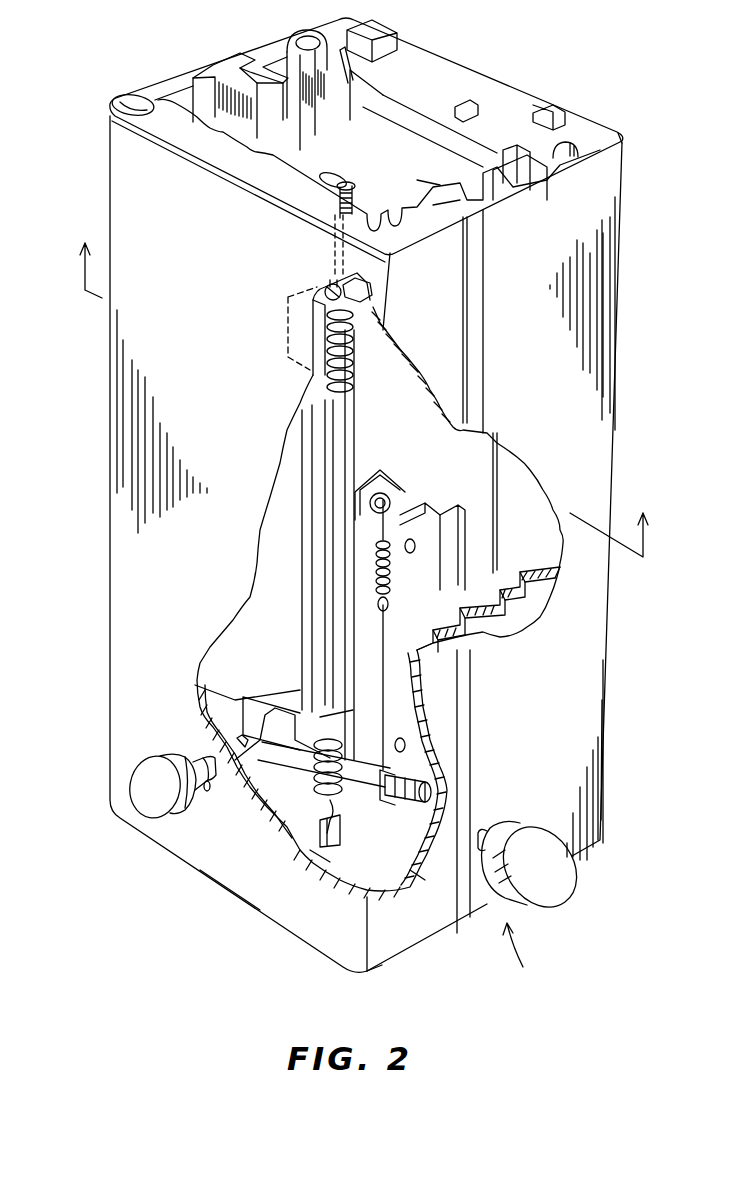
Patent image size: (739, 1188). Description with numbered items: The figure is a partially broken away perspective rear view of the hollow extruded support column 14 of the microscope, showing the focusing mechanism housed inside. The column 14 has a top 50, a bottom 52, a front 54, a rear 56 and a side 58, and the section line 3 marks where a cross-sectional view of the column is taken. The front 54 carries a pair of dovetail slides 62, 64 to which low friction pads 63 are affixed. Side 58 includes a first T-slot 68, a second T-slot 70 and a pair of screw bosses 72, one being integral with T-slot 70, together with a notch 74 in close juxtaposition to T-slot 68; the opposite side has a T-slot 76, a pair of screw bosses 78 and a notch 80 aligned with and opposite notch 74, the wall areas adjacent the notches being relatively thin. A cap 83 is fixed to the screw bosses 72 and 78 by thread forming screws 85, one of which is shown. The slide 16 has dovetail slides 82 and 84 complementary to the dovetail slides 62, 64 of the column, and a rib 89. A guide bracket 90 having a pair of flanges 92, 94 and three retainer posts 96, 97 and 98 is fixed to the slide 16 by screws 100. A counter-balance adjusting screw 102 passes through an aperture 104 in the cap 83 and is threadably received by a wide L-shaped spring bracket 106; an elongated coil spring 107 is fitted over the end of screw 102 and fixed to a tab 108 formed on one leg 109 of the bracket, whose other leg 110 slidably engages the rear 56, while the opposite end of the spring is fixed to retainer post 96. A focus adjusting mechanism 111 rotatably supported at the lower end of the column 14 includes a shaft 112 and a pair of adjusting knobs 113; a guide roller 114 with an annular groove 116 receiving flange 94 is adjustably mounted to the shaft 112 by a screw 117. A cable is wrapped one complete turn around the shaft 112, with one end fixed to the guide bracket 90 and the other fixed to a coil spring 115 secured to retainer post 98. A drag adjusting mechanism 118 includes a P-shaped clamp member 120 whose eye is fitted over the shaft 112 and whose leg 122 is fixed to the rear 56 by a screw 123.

The section line 3- 3 is at (360, 401).
The column 14 is at (610, 426).
The slide 16 is at (396, 158).
The top 50 is at (603, 137).
The bottom 52 is at (410, 953).
The front 54 is at (610, 636).
The rear 56 is at (233, 883).
The side 58 is at (608, 323).
The dovetail slide 62 is at (513, 140).
The low friction pads 63 is at (383, 63).
The dovetail slide 64 is at (350, 75).
The first T-slot 68 is at (440, 210).
The second T-slot 70 is at (528, 180).
The screw bosses 72 is at (577, 157).
The notch 74 is at (420, 180).
The T-slot 76 is at (263, 50).
The screw bosses 78 is at (305, 36).
The notch 80 is at (195, 80).
The dovetail slide 82 is at (358, 97).
The cap 83 is at (197, 145).
The dovetail slide 84 is at (527, 477).
The thread forming screws 85 is at (112, 100).
The rib 89 is at (465, 120).
The guide bracket 90 is at (413, 520).
The flange 92 is at (370, 473).
The flange 94 is at (457, 530).
The retainer post 96 is at (310, 850).
The retainer post 97 is at (407, 490).
The retainer post 98 is at (417, 880).
The screws 100 is at (410, 543).
The counter-balance adjusting screw 102 is at (367, 200).
The aperture 104 is at (330, 188).
The L-shaped spring bracket 106 is at (310, 380).
The coil spring 107 is at (353, 370).
The tab 108 is at (363, 287).
The leg 109 is at (327, 303).
The leg 110 is at (287, 342).
The focus adjusting mechanism 111 is at (553, 988).
The shaft 112 is at (193, 680).
The adjusting knobs 113 is at (395, 687).
The guide roller 114 is at (387, 783).
The coil spring 115 is at (373, 567).
The annular groove 116 is at (393, 787).
The screw 117 is at (363, 827).
The drag adjusting mechanism 118 is at (143, 750).
The P-shaped clamp member 120 is at (247, 710).
The leg 122 is at (237, 727).
The screw 123 is at (213, 783).